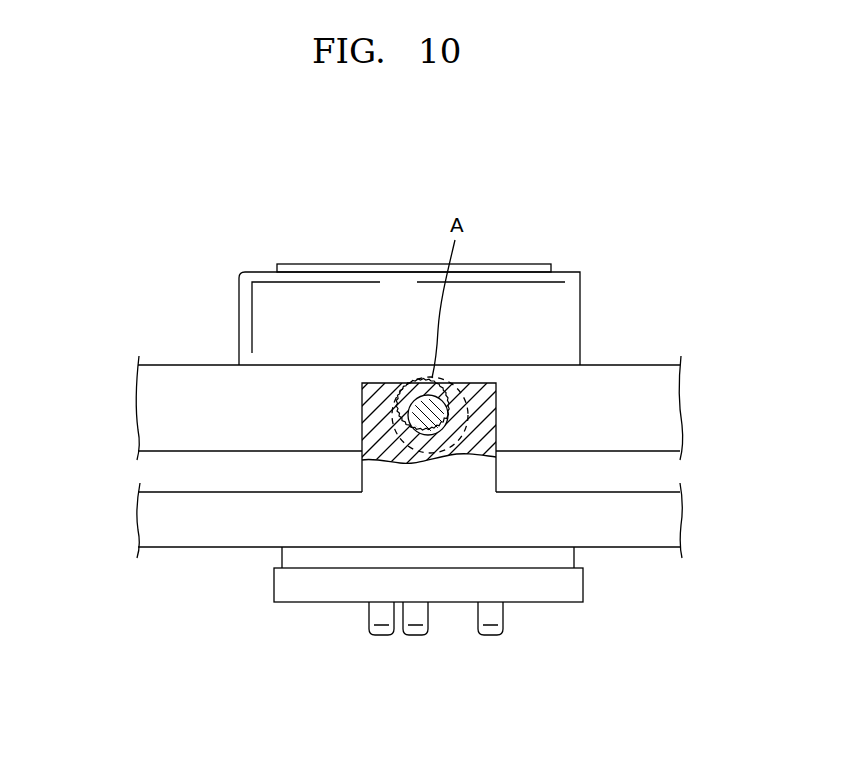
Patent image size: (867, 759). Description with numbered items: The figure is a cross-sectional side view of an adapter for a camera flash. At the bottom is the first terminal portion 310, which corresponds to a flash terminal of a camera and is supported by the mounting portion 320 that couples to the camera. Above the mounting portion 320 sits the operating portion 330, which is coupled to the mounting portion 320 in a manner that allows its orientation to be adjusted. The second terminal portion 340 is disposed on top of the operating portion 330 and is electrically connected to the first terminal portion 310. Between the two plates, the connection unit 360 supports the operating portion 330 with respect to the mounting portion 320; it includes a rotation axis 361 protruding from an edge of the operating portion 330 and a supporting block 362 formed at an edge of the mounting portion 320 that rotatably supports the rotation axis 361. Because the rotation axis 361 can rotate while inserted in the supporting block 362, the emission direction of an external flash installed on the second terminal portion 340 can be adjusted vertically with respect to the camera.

The first terminal portion 310 is at (259, 598).
The mounting portion 320 is at (690, 488).
The operating portion 330 is at (631, 358).
The second terminal portion 340 is at (586, 266).
The connection unit 360 is at (58, 403).
The rotation axis 361 is at (437, 406).
The supporting block 362 is at (380, 478).